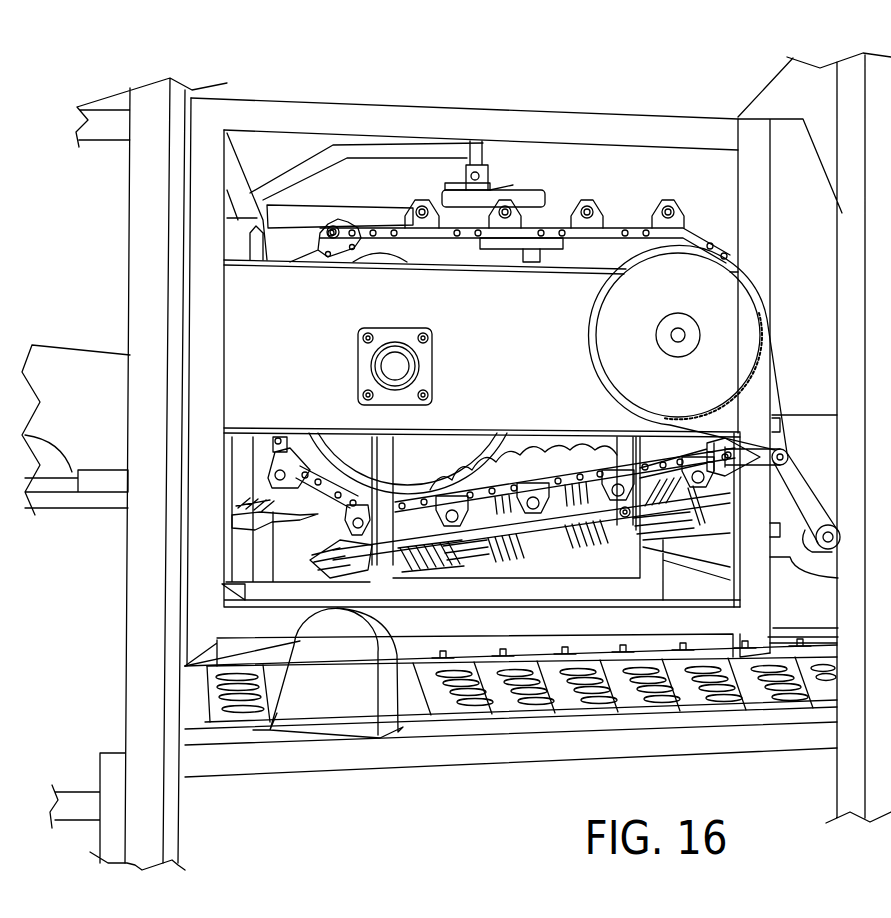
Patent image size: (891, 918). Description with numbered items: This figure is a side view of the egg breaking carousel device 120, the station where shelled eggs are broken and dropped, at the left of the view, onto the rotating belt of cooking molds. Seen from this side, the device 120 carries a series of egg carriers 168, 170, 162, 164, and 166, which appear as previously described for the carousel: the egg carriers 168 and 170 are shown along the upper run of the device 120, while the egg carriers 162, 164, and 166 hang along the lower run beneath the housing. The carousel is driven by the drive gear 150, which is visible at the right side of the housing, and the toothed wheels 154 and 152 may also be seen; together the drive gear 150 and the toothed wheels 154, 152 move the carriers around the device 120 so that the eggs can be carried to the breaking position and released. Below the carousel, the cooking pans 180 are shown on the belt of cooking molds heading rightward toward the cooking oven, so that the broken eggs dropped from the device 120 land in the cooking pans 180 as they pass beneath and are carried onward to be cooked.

The egg breaking carousel device 120 is at (530, 140).
The drive gear 150 is at (693, 298).
The toothed wheel 152 is at (568, 445).
The toothed wheel 154 is at (406, 470).
The egg carrier 162 is at (438, 573).
The egg carrier 164 is at (518, 561).
The egg carrier 166 is at (593, 534).
The egg carrier 168 is at (428, 230).
The egg carrier 170 is at (503, 247).
The cooking pans 180 is at (617, 700).